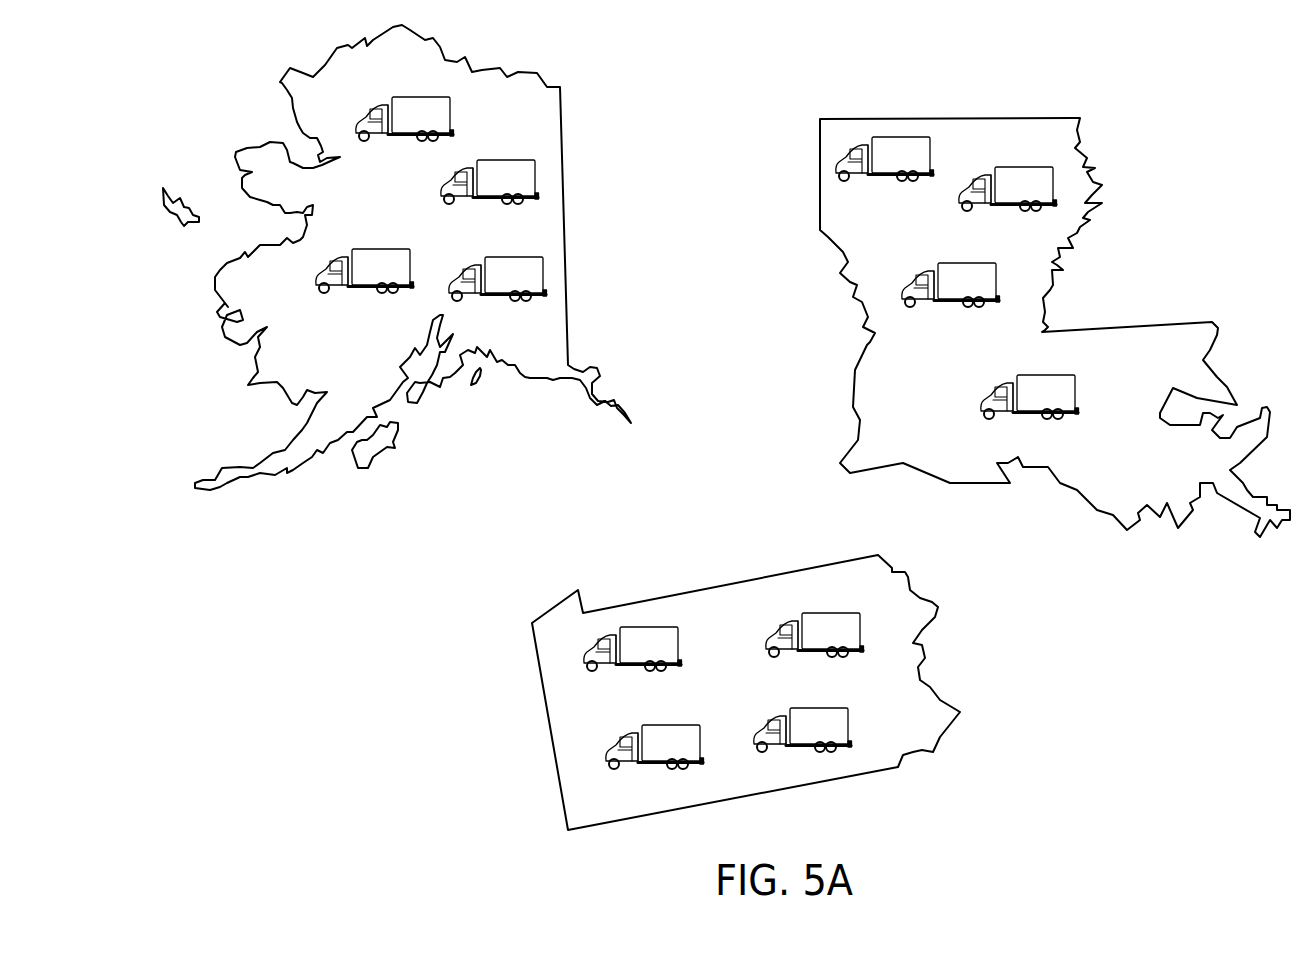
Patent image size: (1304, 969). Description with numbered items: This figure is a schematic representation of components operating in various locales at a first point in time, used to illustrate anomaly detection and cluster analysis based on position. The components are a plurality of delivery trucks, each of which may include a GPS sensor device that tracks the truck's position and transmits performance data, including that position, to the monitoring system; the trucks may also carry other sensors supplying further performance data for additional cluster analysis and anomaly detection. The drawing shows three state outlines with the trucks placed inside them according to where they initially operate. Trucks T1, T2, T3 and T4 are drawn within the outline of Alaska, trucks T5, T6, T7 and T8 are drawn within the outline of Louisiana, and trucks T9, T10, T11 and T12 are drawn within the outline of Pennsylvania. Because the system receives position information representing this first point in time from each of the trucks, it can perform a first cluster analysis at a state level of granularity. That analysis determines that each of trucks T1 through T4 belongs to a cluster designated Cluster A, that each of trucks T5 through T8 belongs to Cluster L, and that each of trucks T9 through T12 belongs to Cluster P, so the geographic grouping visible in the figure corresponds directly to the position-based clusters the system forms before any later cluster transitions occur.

The delivery truck T1 is at (408, 124).
The delivery truck T2 is at (493, 188).
The delivery truck T3 is at (368, 276).
The delivery truck T4 is at (501, 284).
The delivery truck T5 is at (888, 164).
The delivery truck T6 is at (1011, 194).
The delivery truck T7 is at (954, 290).
The delivery truck T8 is at (1033, 402).
The delivery truck T9 is at (636, 654).
The delivery truck T10 is at (812, 640).
The delivery truck T11 is at (652, 752).
The delivery truck T12 is at (800, 736).